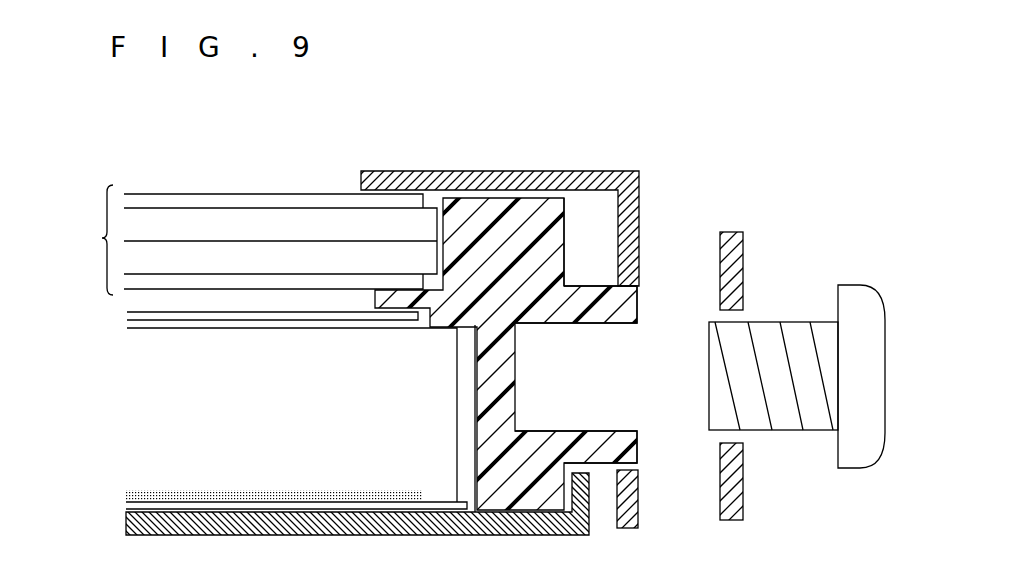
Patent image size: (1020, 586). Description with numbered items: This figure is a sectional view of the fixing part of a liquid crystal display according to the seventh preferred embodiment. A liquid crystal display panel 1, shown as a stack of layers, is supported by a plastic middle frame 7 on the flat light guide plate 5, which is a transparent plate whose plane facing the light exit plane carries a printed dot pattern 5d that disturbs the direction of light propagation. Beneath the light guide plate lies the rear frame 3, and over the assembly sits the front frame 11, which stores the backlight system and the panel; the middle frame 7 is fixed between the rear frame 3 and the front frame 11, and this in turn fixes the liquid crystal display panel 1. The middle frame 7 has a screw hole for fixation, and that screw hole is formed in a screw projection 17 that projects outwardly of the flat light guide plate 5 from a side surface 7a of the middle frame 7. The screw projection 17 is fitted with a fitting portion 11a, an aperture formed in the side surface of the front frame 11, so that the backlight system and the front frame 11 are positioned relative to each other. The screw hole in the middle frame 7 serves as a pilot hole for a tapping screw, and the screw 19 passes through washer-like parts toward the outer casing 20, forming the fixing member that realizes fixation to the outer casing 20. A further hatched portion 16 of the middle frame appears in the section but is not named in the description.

The liquid crystal display panel 1 is at (259, 240).
The rear frame 3 is at (127, 520).
The flat light guide plate 5 is at (145, 408).
The printed dot pattern 5d is at (160, 493).
The middle frame 7 is at (492, 210).
The side surface of the middle frame 7a is at (565, 230).
The front frame 11 is at (640, 238).
The fitting portion 11a is at (625, 473).
The upper flange 16 is at (578, 323).
The screw projection 17 is at (638, 447).
The screw 19 is at (847, 285).
The outer casing 20 is at (743, 255).